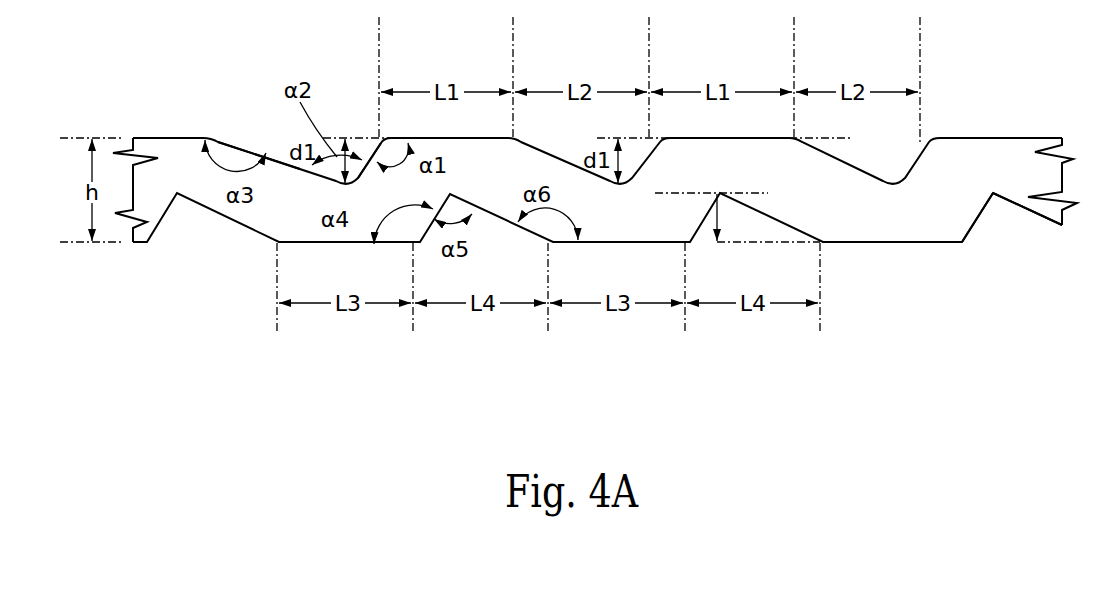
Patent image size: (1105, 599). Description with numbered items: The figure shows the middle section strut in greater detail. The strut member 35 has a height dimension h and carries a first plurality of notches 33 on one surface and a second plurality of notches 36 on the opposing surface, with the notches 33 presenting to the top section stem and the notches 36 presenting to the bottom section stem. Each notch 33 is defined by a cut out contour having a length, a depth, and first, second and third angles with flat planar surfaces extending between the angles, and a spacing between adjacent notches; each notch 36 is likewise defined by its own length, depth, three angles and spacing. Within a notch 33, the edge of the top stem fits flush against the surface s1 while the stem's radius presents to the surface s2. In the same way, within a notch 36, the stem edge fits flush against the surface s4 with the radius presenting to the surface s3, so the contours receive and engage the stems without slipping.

The first plurality of notches 33 is at (597, 107).
The second plurality of notches 36 is at (597, 280).
The strut member 35 is at (992, 182).
The surface s1 is at (277, 148).
The surface s2 is at (378, 138).
The surface s3 is at (1027, 212).
The surface s4 is at (972, 228).